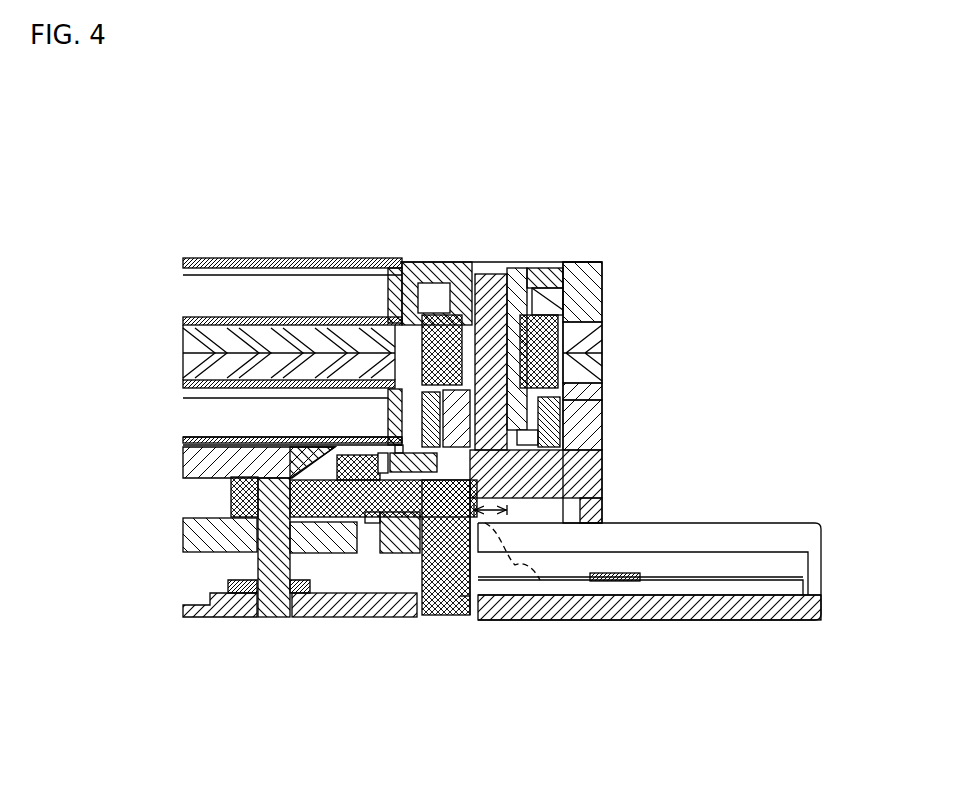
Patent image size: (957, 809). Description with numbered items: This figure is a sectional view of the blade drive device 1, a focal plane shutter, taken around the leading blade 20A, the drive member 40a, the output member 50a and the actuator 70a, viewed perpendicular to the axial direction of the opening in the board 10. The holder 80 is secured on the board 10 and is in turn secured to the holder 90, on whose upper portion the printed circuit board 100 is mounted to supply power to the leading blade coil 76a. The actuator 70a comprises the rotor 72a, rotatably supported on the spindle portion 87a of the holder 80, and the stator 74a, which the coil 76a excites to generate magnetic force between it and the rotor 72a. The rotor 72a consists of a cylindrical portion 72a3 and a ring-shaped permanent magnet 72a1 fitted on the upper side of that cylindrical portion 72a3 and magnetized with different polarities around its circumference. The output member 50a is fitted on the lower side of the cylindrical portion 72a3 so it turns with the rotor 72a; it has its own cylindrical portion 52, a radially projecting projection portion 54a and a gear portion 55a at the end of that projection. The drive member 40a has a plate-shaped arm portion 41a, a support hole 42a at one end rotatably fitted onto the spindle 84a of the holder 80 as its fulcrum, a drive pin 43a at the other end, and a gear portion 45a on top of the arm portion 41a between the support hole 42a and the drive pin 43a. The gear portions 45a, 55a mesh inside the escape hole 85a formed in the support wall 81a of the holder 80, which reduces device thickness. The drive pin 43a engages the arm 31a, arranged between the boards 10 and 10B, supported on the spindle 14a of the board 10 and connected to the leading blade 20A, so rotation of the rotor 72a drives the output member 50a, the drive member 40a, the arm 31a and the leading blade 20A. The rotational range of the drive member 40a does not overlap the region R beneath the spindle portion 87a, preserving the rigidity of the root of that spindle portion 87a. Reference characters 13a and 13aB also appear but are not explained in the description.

The blade drive device 1 is at (560, 152).
The printed circuit board 100 is at (215, 258).
The leading blade coil 76a is at (293, 303).
The stator 74a is at (262, 358).
The support wall 81a is at (235, 440).
The spindle 84a is at (185, 466).
The drive member 40a is at (231, 487).
The support hole 42a is at (203, 519).
The spindle 14a is at (275, 617).
The arm portion 41a is at (327, 517).
The gear portion 45a is at (390, 617).
The drive pin 43a is at (430, 615).
The bearing 13a is at (464, 600).
The bearing bottom 13aB is at (470, 600).
The gear portion 55a is at (385, 445).
The escape hole 85a is at (363, 440).
The spindle portion 87a is at (482, 262).
The rotor 72a is at (616, 264).
The cylindrical portion 72a3 is at (520, 280).
The permanent magnet 72a1 is at (550, 305).
The actuator 70a is at (607, 272).
The holder 90 is at (608, 295).
The cylindrical portion 52 is at (600, 386).
The output member 50a is at (604, 412).
The holder 80 is at (608, 428).
The projection portion 54a is at (555, 474).
The board 10 is at (787, 521).
The leading blade 20A is at (705, 578).
The arm 31a is at (563, 580).
The board 10B is at (703, 620).
The region R is at (548, 590).